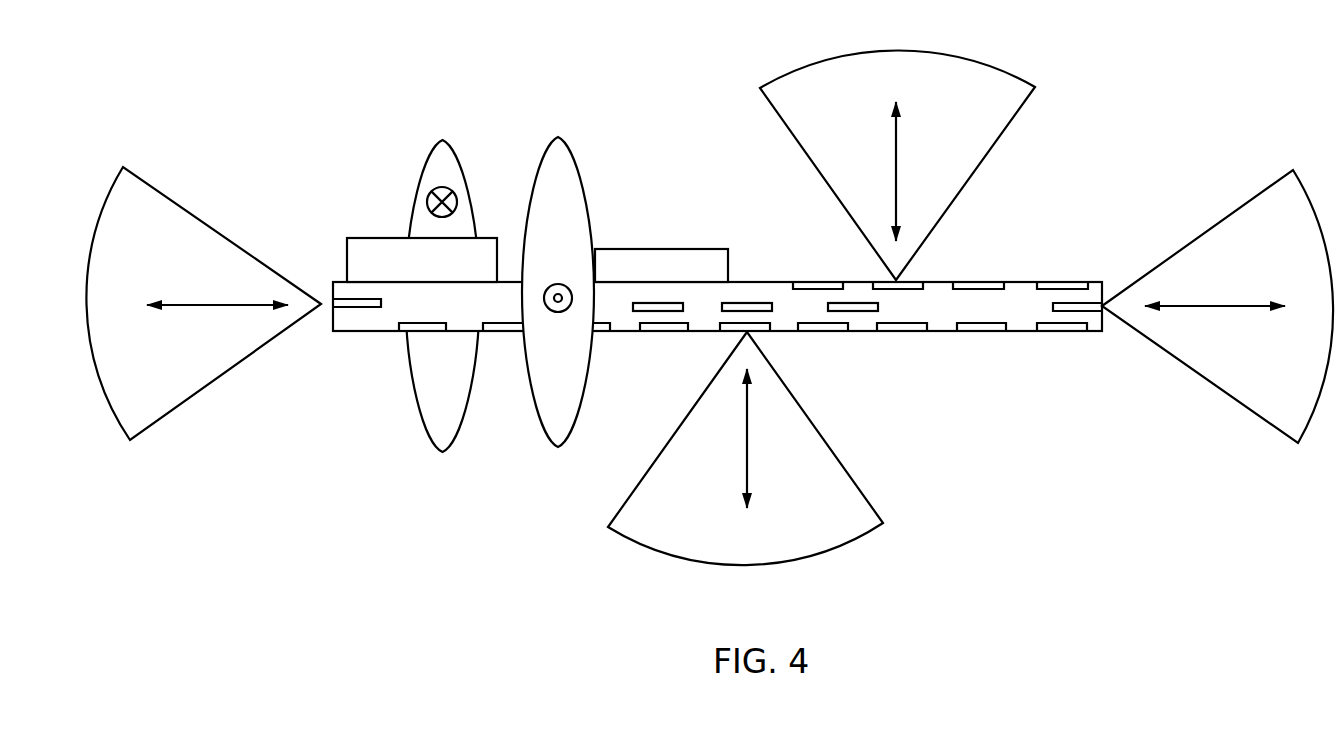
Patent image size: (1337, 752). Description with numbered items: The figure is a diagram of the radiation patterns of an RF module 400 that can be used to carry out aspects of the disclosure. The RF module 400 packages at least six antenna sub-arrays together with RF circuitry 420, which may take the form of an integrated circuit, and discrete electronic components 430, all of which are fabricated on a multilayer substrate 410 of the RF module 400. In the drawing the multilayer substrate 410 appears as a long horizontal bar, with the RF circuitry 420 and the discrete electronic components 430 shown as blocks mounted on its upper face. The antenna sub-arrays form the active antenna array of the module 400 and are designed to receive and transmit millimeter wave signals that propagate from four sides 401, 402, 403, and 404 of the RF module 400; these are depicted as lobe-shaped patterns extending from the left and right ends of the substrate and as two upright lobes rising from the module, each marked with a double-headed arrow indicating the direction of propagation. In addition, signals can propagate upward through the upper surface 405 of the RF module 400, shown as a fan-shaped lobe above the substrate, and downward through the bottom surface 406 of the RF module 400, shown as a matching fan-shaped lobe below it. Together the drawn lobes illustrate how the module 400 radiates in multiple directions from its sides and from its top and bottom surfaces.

The RF module 400 is at (1020, 265).
The side 401 is at (1190, 375).
The side 402 is at (178, 197).
The side 403 is at (443, 137).
The side 404 is at (558, 134).
The upper surface 405 is at (935, 49).
The bottom surface 406 is at (835, 452).
The multilayer substrate 410 is at (940, 331).
The RF circuitry 420 is at (673, 249).
The discrete electronic components 430 is at (380, 237).